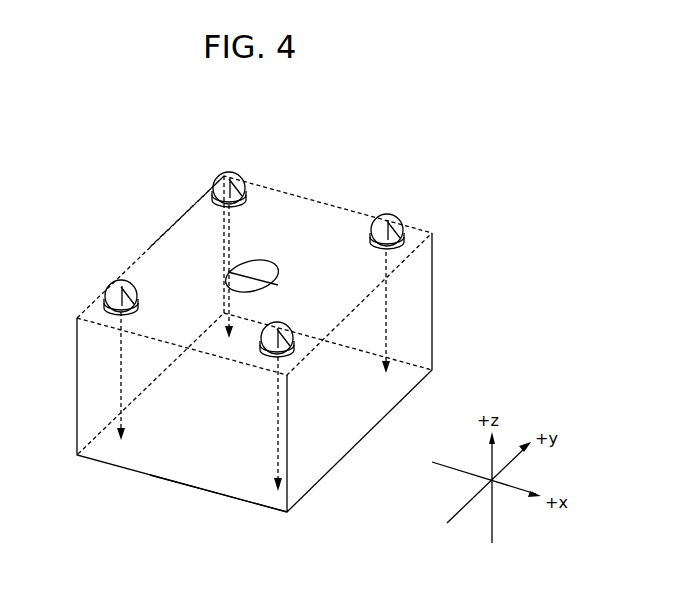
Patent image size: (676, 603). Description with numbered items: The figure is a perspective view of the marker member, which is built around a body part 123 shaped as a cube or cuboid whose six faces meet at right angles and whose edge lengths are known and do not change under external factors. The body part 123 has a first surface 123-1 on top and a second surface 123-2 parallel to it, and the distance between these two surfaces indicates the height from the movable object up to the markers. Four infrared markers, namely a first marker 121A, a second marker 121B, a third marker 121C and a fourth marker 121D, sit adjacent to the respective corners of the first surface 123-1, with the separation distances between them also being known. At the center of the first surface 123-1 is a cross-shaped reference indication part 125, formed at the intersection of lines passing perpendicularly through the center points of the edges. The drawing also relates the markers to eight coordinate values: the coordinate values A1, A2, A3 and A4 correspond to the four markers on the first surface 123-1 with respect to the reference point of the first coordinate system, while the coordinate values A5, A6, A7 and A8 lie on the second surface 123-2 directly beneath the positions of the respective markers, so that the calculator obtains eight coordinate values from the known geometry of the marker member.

The body part 123 is at (440, 335).
The first surface 123-1 is at (193, 222).
The second surface 123-2 is at (203, 467).
The first marker 121A is at (112, 287).
The second marker 121B is at (262, 355).
The third marker 121C is at (218, 177).
The fourth marker 121D is at (394, 219).
The reference indication part 125 is at (243, 290).
The first-1 coordinate value A1 is at (105, 296).
The first-2 coordinate value A2 is at (303, 344).
The first-3 coordinate value A3 is at (405, 240).
The first-4 coordinate value A4 is at (240, 178).
The first-5 coordinate value A5 is at (122, 443).
The first-6 coordinate value A6 is at (277, 493).
The first-7 coordinate value A7 is at (393, 382).
The first-8 coordinate value A8 is at (228, 322).